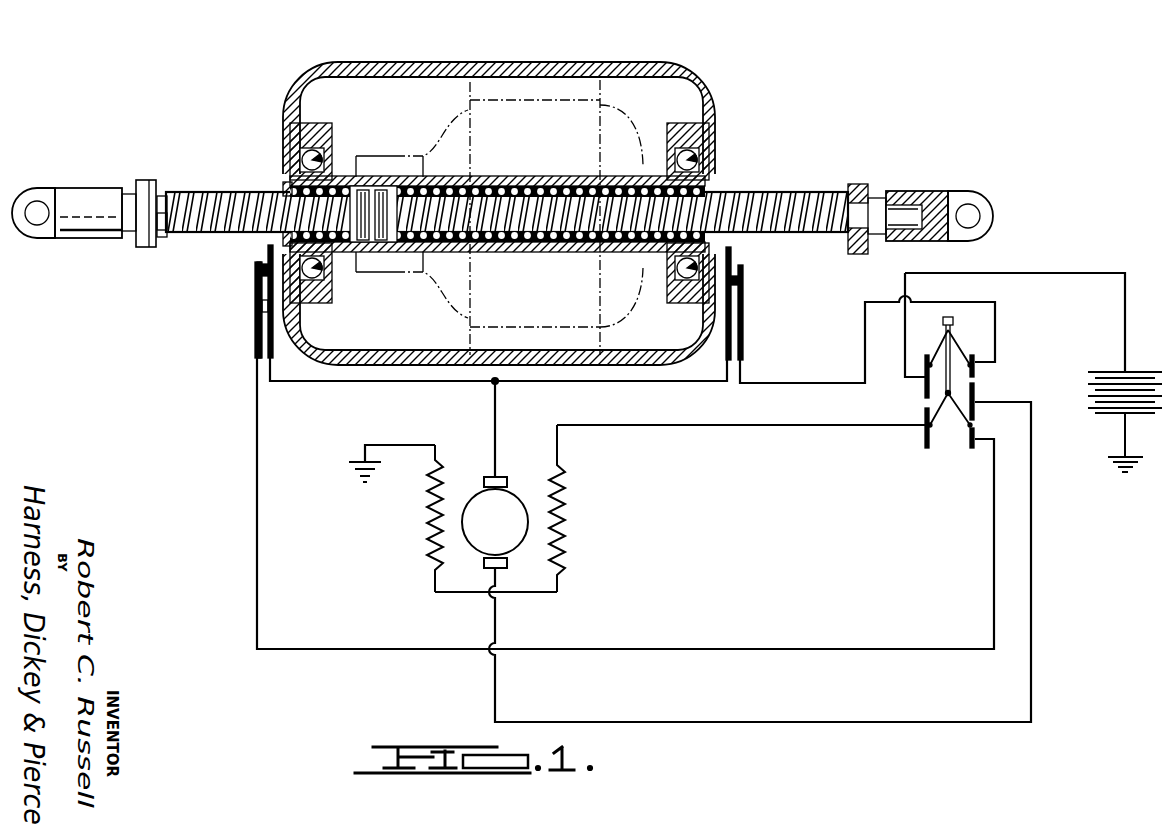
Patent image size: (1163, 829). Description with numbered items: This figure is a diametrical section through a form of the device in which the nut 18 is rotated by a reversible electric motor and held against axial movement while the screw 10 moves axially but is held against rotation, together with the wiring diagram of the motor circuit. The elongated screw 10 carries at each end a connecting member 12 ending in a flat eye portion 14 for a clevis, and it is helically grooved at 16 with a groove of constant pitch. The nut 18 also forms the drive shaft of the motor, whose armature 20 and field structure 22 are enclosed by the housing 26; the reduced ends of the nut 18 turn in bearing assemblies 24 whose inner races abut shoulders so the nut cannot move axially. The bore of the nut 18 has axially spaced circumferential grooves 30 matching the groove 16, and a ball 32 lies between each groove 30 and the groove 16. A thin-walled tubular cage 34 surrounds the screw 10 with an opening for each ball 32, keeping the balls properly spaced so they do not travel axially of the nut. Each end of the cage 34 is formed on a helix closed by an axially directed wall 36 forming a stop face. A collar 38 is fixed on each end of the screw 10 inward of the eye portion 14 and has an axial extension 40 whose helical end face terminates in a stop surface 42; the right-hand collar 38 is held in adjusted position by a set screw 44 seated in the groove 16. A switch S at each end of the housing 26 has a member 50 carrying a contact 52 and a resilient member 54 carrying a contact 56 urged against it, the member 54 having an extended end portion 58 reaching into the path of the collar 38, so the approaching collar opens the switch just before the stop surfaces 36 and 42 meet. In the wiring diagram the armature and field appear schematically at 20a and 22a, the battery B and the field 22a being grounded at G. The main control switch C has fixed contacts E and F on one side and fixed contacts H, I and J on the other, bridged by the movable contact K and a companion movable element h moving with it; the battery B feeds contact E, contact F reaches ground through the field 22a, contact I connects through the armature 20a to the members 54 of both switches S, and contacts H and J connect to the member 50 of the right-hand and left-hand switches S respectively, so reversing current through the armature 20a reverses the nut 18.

The screw 10 is at (796, 193).
The connecting member 12 is at (62, 188).
The flat eye portion 14 is at (44, 190).
The helical groove 16 is at (748, 198).
The nut 18 is at (517, 180).
The armature 20 is at (445, 120).
The armature (schematic) 20a is at (512, 530).
The field structure 22 is at (468, 85).
The field structure (schematic) 22a is at (560, 512).
The bearing assembly 24 is at (293, 142).
The housing 26 is at (702, 78).
The circumferential groove 30 is at (631, 188).
The ball 32 is at (285, 190).
The cage 34 is at (470, 250).
The axially directed wall 36 is at (272, 235).
The collar 38 is at (148, 181).
The axial extension 40 is at (160, 192).
The stop surface 42 is at (165, 236).
The set screw 44 is at (866, 254).
The switch member 50 is at (257, 342).
The contact 52 is at (600, 250).
The resilient member 54 is at (258, 325).
The contact 56 is at (262, 270).
The extended end portion 58 is at (268, 247).
The switch S is at (250, 318).
The battery B is at (1104, 414).
The main control switch C is at (943, 466).
The fixed contact E is at (923, 392).
The fixed contact F is at (923, 440).
The ground G is at (363, 470).
The fixed contact H is at (976, 362).
The fixed contact I is at (976, 394).
The fixed contact J is at (976, 440).
The movable contact K is at (946, 426).
The armature pivot h is at (944, 321).